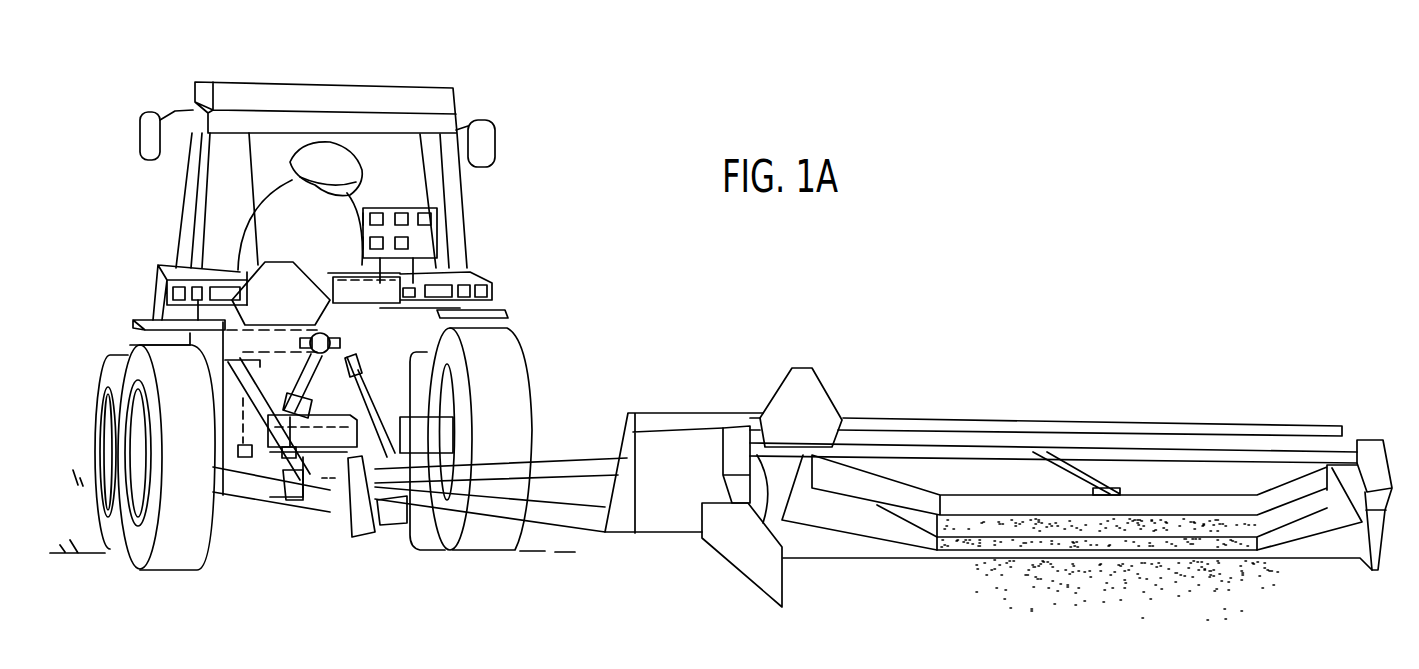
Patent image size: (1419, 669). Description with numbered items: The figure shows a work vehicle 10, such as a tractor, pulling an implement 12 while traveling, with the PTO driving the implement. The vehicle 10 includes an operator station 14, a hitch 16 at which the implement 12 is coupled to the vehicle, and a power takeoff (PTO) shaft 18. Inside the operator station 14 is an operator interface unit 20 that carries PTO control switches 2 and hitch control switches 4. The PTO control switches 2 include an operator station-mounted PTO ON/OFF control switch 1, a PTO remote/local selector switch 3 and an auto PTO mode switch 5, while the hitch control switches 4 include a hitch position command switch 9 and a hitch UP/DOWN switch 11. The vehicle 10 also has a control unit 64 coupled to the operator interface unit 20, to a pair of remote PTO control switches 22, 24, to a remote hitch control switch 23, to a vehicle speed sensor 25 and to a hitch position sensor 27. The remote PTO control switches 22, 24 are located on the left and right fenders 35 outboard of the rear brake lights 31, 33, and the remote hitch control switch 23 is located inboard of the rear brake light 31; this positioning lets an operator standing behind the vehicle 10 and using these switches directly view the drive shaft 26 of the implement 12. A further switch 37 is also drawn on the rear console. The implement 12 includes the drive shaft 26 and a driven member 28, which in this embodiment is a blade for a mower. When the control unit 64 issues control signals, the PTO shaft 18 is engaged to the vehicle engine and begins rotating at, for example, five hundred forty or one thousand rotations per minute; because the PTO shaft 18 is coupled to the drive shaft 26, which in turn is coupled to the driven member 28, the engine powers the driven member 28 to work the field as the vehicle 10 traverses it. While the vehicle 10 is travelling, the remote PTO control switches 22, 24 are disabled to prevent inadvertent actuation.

The work vehicle 10 is at (260, 76).
The operator station 14 is at (430, 100).
The auto PTO mode switch 5 is at (427, 207).
The PTO ON/OFF control switch 1 is at (377, 212).
The PTO remote/local selector switch 3 is at (401, 212).
The hitch UP/DOWN switch 11 is at (408, 243).
The hitch position command switch 9 is at (376, 251).
The PTO control switches 2 is at (352, 216).
The hitch control switches 4 is at (352, 242).
The operator interface unit 20 is at (330, 227).
The remote PTO control switch 22 is at (170, 268).
The rear brake light 33 is at (215, 268).
The fenders 35 is at (172, 293).
The control unit 64 is at (331, 289).
The remote PTO control switch 24 is at (492, 282).
The remote hitch control switch 23 is at (405, 267).
The rear brake light 31 is at (436, 266).
The console switch 37 is at (467, 296).
The hitch 16 is at (390, 437).
The vehicle speed sensor 25 is at (252, 460).
The hitch position sensor 27 is at (293, 488).
The power takeoff (PTO) shaft 18 is at (332, 500).
The drive shaft 26 is at (500, 467).
The driven member 28 is at (984, 396).
The implement 12 is at (925, 437).